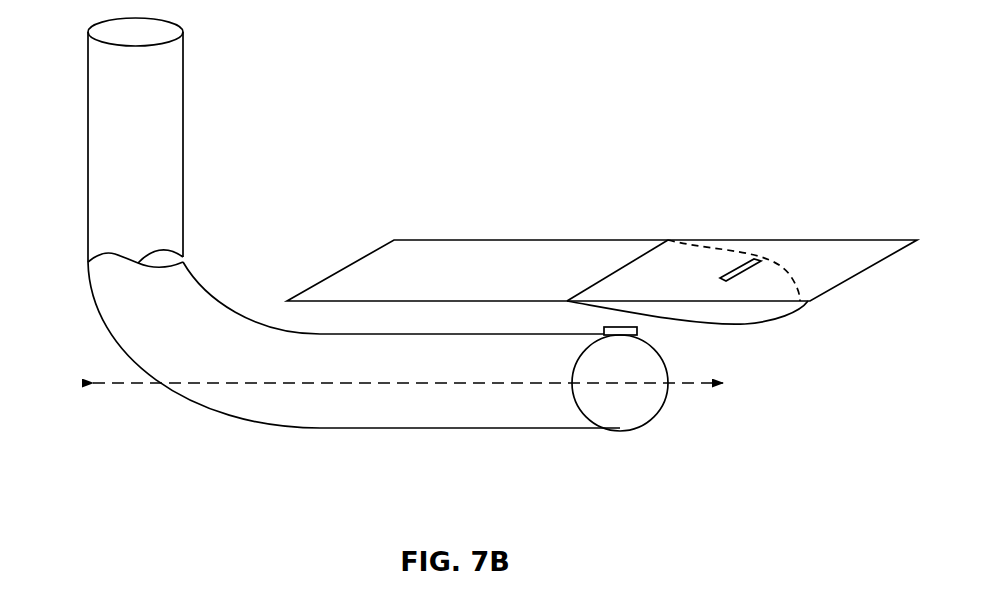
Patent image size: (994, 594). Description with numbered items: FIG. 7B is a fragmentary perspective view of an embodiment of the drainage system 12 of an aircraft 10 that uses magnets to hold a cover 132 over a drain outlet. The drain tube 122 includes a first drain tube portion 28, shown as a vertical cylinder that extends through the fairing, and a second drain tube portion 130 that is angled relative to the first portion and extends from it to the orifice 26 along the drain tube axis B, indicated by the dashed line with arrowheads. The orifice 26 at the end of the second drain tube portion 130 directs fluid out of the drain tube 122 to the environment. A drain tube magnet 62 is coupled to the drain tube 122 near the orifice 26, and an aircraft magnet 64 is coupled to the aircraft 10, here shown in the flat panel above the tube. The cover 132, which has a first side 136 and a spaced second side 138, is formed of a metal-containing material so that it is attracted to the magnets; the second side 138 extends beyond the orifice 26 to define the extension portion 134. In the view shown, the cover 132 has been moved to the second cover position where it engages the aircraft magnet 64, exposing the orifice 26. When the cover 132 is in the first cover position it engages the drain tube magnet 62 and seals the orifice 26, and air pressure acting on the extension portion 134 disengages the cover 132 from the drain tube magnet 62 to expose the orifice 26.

The aircraft 10 is at (408, 231).
The drainage system 12 is at (604, 276).
The orifice 26 is at (640, 424).
The first drain tube portion 28 is at (88, 135).
The drain tube magnet 62 is at (604, 331).
The aircraft magnet 64 is at (740, 262).
The drain tube 122 is at (182, 422).
The second drain tube portion 130 is at (345, 430).
The cover 132 is at (751, 341).
The extension portion 134 is at (780, 262).
The first side 136 is at (622, 268).
The second side 138 is at (782, 312).
The drain tube axis B is at (686, 386).